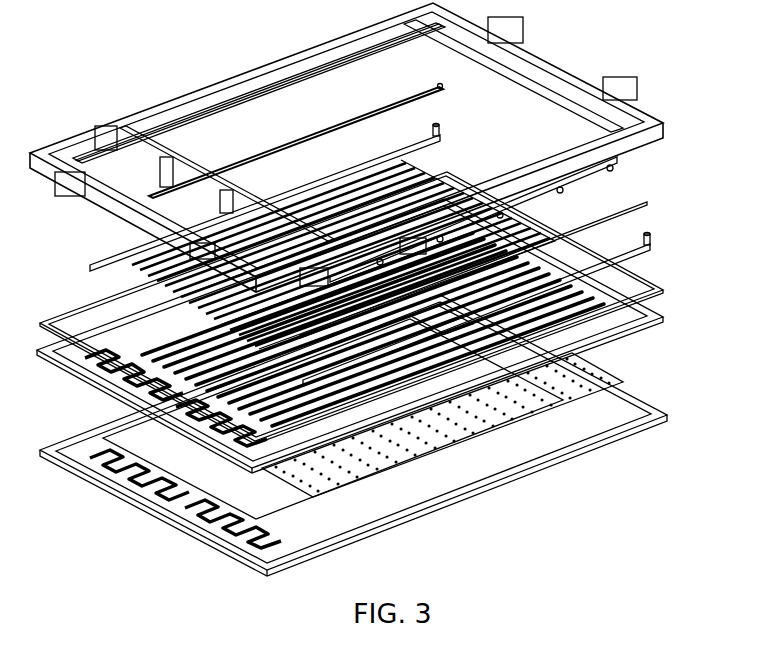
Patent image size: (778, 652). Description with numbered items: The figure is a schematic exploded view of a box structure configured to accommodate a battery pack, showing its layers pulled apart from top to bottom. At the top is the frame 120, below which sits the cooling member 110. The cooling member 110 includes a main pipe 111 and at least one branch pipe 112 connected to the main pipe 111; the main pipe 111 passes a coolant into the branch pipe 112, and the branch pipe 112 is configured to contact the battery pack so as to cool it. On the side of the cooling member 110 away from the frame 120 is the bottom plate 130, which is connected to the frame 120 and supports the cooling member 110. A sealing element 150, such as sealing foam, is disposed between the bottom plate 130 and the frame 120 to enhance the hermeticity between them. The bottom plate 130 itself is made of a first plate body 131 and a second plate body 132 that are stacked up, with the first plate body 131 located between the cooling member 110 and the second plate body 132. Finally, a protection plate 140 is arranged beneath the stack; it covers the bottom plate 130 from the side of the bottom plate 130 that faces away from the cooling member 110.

The cooling member 110 is at (388, 255).
The main pipe 111 is at (655, 250).
The branch pipe 112 is at (123, 277).
The frame 120 is at (660, 128).
The bottom plate 130 is at (402, 348).
The first plate body 131 is at (660, 320).
The second plate body 132 is at (607, 380).
The protection plate 140 is at (660, 414).
The sealing element 150 is at (660, 288).